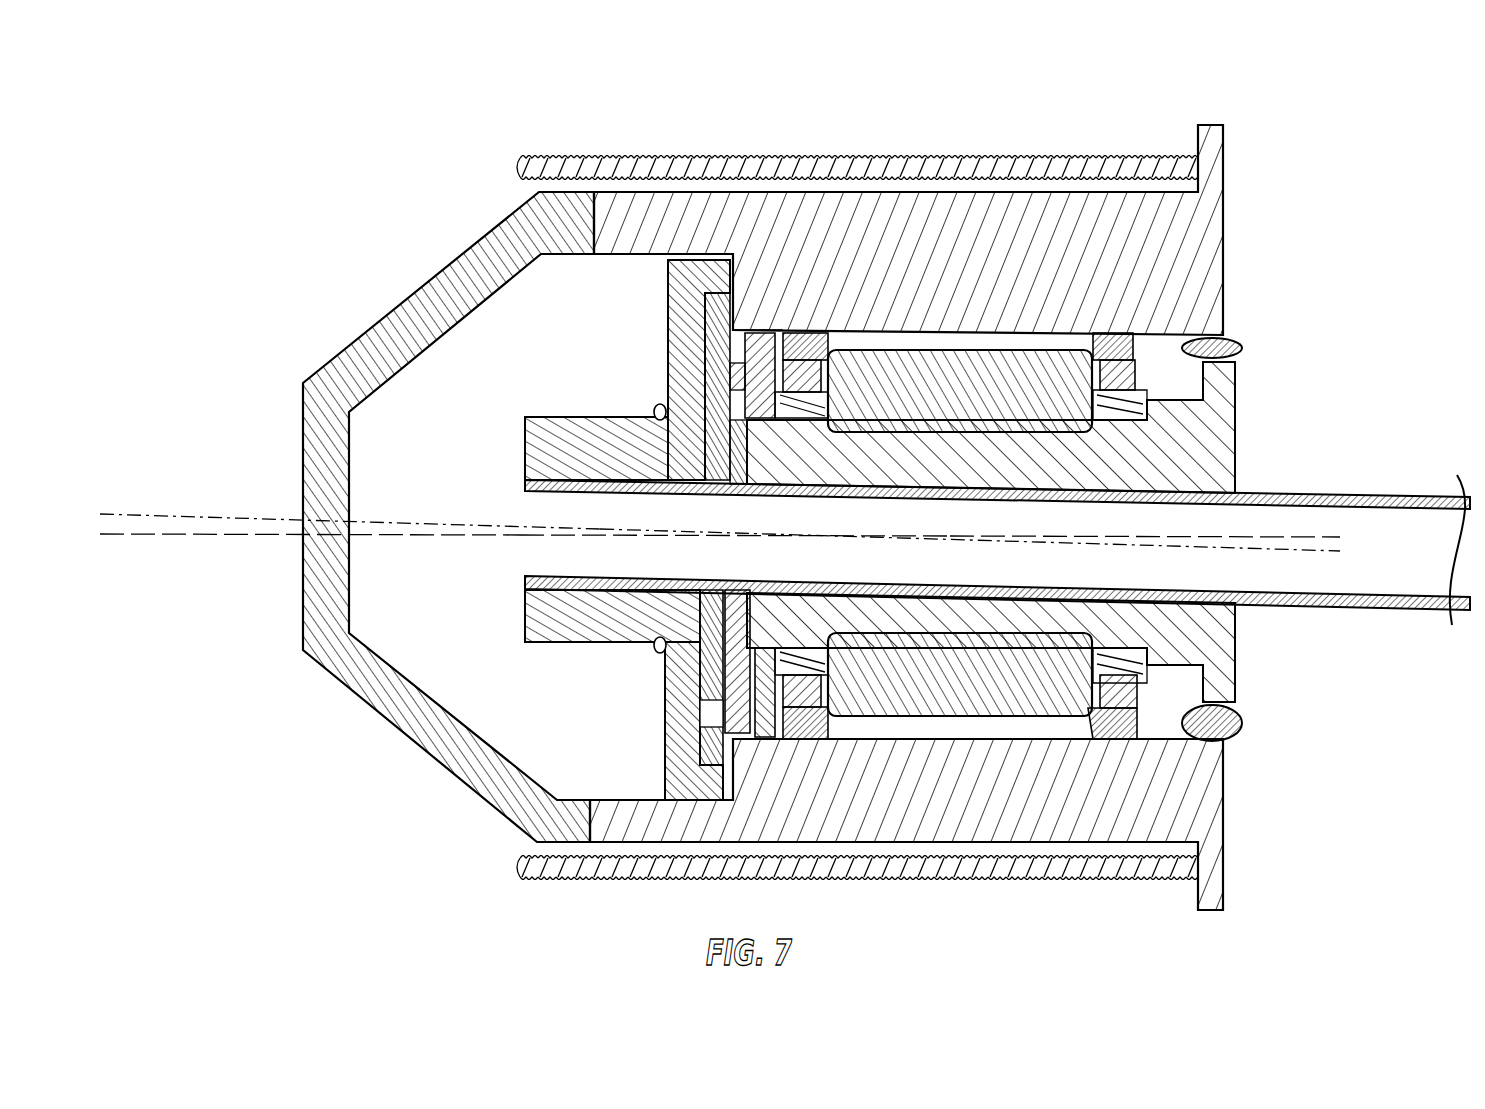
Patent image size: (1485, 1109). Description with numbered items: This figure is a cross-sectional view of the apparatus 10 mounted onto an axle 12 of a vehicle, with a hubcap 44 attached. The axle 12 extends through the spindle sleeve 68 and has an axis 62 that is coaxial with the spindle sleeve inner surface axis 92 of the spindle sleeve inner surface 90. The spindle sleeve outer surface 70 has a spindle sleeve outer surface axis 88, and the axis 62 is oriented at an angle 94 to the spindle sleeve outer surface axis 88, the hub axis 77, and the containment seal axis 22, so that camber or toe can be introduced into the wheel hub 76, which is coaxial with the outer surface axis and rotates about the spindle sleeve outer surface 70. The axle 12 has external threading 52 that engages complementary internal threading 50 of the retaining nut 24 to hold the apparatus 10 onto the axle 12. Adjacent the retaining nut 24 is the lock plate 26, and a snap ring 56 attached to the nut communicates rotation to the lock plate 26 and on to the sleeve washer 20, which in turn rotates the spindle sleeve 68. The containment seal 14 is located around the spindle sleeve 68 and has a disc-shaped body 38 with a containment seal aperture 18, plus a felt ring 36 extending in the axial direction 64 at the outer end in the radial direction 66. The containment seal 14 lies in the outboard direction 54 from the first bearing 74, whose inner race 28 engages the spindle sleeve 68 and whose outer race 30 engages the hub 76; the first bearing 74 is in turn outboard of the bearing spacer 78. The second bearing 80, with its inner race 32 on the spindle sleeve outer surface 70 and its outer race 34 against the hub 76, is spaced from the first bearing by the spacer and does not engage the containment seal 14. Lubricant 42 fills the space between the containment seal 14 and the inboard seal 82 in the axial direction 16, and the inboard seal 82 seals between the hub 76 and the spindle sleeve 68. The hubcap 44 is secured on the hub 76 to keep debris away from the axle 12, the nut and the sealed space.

The apparatus 10 is at (1316, 120).
The axle 12 is at (1345, 497).
The containment seal 14 is at (763, 728).
The axial direction 16 is at (232, 543).
The containment seal aperture 18 is at (763, 647).
The sleeve washer 20 is at (733, 348).
The containment seal axis 22 is at (735, 535).
The retaining nut 24 is at (523, 641).
The lock plate 26 is at (712, 672).
The inner race 28 is at (797, 650).
The outer race 30 is at (812, 727).
The inner race 32 is at (1130, 657).
The outer race 34 is at (1110, 727).
The felt ring 36 is at (778, 330).
The body 38 is at (762, 398).
The lubricant 42 is at (868, 735).
The hubcap 44 is at (432, 292).
The internal threading 50 is at (557, 484).
The external threading 52 is at (532, 596).
The outboard direction 54 is at (460, 545).
The snap ring 56 is at (652, 647).
The axis 62 is at (162, 516).
The axial direction 64 is at (865, 545).
The radial direction 66 is at (771, 242).
The spindle sleeve 68 is at (1222, 428).
The spindle sleeve outer surface 70 is at (880, 420).
The first bearing 74 is at (813, 332).
The wheel hub 76 is at (1207, 797).
The hub axis 77 is at (257, 540).
The bearing spacer 78 is at (960, 533).
The second bearing 80 is at (1130, 695).
The inboard seal 82 is at (1230, 723).
The spindle sleeve outer surface axis 88 is at (1145, 536).
The spindle sleeve inner surface 90 is at (1040, 586).
The spindle sleeve inner surface axis 92 is at (638, 530).
The angle 94 is at (493, 537).